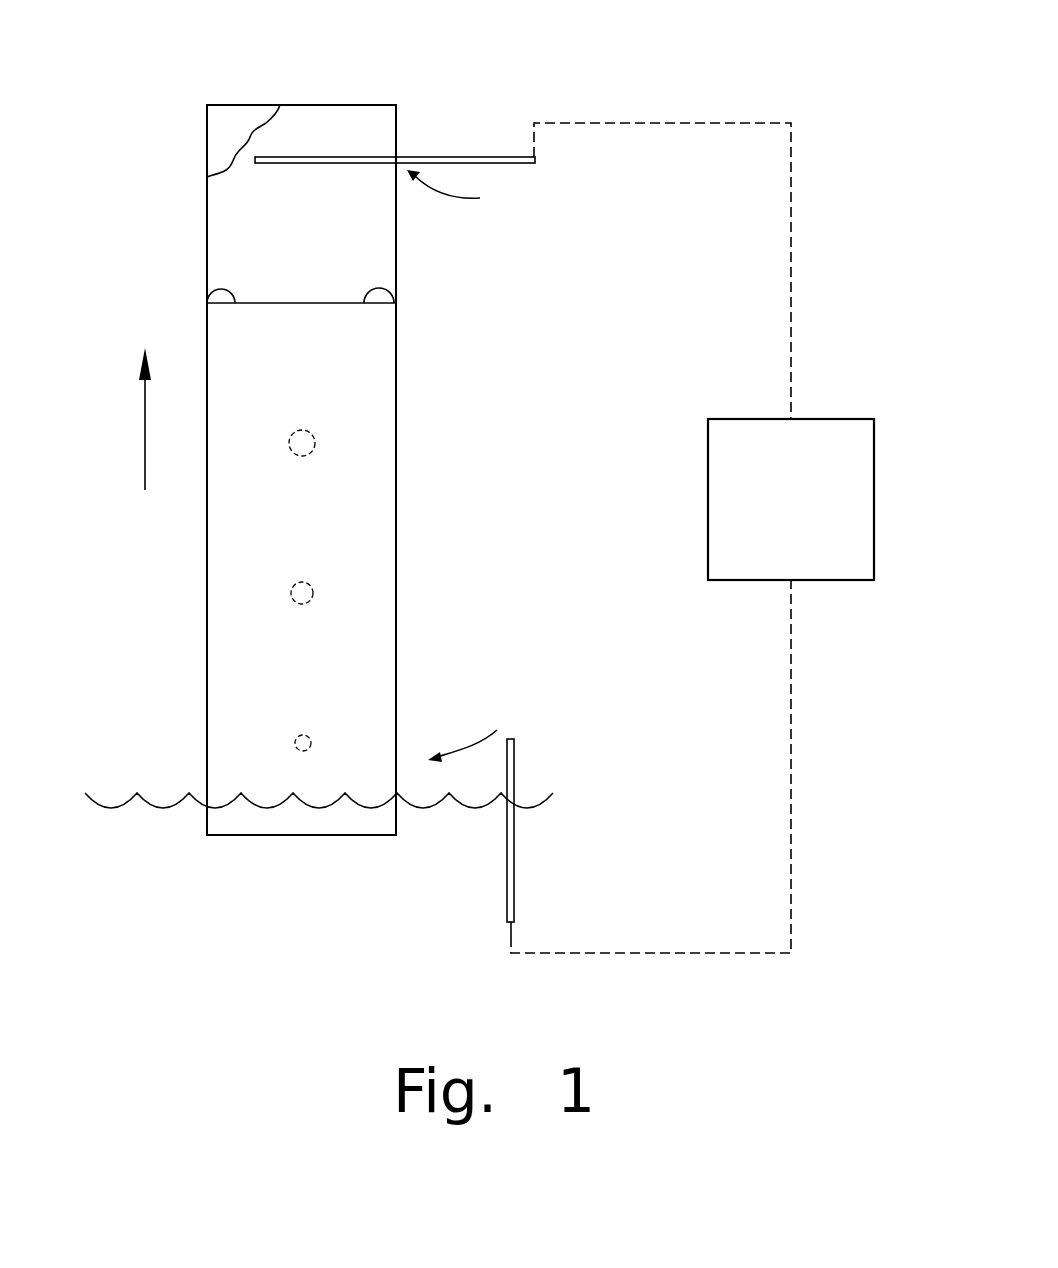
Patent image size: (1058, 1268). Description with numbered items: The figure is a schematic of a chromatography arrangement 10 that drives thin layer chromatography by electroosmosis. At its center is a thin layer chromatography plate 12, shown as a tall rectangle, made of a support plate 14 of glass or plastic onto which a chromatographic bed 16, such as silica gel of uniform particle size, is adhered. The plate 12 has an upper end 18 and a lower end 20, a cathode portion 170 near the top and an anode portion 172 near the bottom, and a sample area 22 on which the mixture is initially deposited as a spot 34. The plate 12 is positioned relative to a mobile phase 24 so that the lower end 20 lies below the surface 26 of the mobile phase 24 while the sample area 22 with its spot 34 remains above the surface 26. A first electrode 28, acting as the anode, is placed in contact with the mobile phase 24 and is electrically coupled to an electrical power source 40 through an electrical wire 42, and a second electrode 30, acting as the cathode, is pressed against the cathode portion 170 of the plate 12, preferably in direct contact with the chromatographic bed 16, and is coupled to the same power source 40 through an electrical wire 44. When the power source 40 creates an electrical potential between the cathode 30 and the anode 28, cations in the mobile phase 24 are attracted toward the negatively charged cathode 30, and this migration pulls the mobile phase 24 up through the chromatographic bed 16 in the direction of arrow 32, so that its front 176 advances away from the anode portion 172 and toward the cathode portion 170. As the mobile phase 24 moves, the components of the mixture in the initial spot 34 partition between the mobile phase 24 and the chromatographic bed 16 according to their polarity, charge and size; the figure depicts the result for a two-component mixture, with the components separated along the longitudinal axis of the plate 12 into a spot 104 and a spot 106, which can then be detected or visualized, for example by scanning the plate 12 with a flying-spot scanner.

The chromatography arrangement 10 is at (781, 84).
The thin layer chromatography plate 12 is at (431, 84).
The support plate 14 is at (235, 123).
The chromatographic bed 16 is at (225, 200).
The end 18 is at (340, 105).
The end 20 is at (367, 838).
The sample area 22 is at (180, 710).
The mobile phase 24 is at (207, 287).
The surface 26 is at (170, 806).
The first electrode 28 is at (515, 863).
The second electrode 30 is at (485, 155).
The arrow 32 is at (143, 437).
The spot 34 is at (309, 737).
The electrical power source 40 is at (874, 445).
The electrical wire 42 is at (665, 957).
The electrical wire 44 is at (647, 123).
The spot 104 is at (311, 584).
The spot 106 is at (312, 432).
The cathode portion 170 is at (467, 192).
The anode portion 172 is at (476, 731).
The front 176 is at (395, 288).